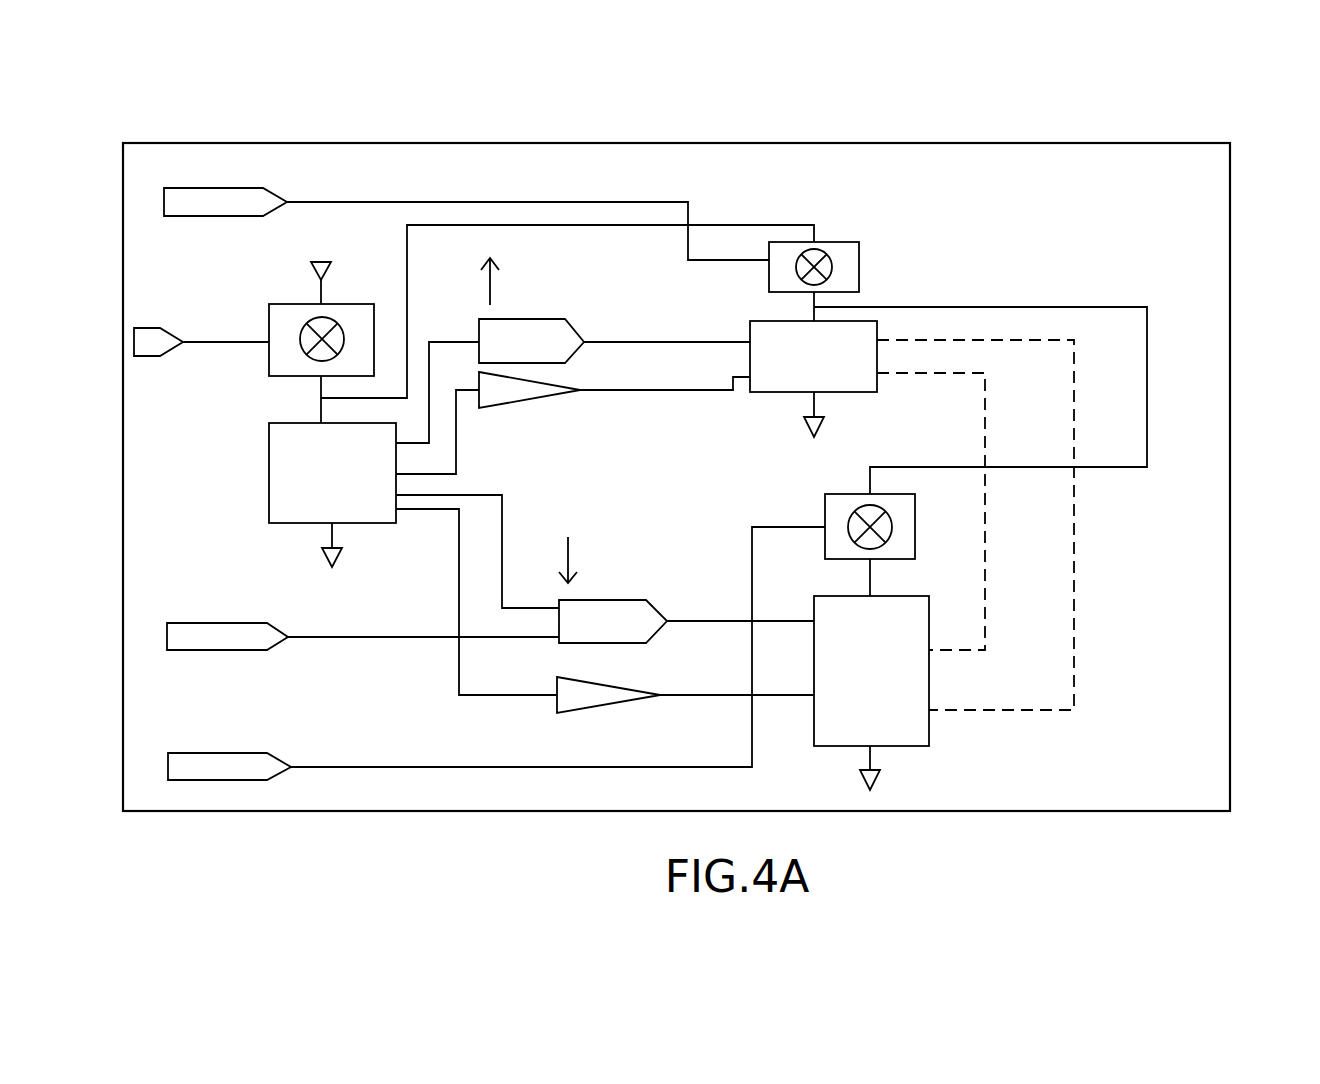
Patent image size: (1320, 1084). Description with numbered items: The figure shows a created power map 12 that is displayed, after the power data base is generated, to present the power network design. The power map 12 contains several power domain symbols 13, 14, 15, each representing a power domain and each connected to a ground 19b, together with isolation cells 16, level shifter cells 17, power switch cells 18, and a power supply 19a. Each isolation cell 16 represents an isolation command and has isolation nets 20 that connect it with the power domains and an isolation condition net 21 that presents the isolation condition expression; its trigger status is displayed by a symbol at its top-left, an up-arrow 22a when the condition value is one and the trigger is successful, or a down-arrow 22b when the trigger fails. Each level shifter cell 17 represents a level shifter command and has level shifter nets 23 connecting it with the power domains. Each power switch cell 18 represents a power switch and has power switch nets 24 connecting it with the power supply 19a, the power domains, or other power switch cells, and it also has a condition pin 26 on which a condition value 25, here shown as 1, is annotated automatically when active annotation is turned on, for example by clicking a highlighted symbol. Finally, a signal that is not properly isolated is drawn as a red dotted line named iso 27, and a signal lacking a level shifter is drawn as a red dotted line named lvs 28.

The power map 12 is at (1238, 190).
The condition value 25 is at (270, 319).
The first mixer block 1 is at (309, 335).
The power supply 19a is at (311, 276).
The ground 19b is at (328, 552).
The power switch net 24 is at (330, 292).
The condition pin 26 is at (269, 346).
The power switch cell 18 is at (269, 370).
The power domain symbol 13 is at (332, 473).
The power domain symbol 14 is at (813, 356).
The power domain symbol 15 is at (871, 671).
The isolation cell 16 is at (573, 481).
The level shifter cell 17 is at (569, 542).
The isolation net 20 is at (442, 342).
The level shifter net 23 is at (457, 443).
The isolation condition net 21 is at (394, 637).
The up-arrow 22a is at (512, 252).
The down-arrow 22b is at (575, 532).
The iso 27 is at (985, 440).
The lvs 28 is at (1075, 583).